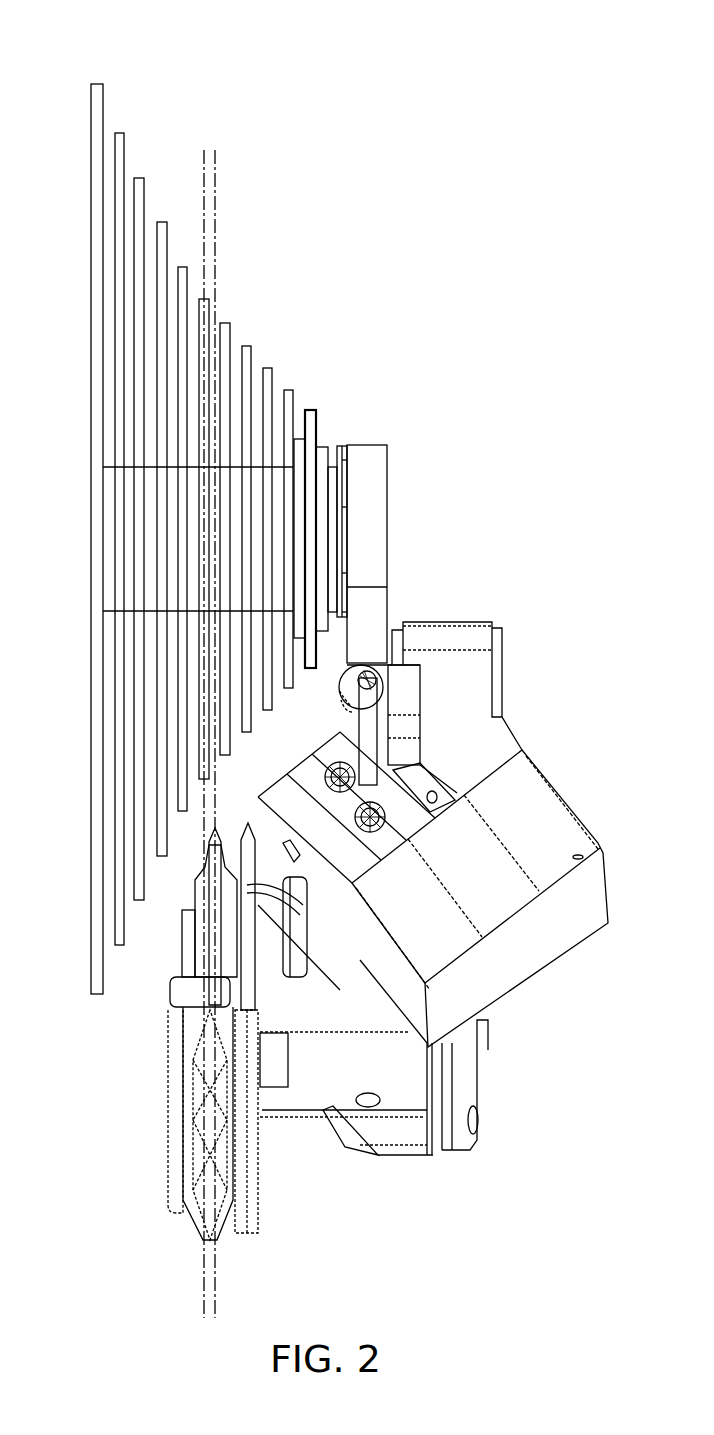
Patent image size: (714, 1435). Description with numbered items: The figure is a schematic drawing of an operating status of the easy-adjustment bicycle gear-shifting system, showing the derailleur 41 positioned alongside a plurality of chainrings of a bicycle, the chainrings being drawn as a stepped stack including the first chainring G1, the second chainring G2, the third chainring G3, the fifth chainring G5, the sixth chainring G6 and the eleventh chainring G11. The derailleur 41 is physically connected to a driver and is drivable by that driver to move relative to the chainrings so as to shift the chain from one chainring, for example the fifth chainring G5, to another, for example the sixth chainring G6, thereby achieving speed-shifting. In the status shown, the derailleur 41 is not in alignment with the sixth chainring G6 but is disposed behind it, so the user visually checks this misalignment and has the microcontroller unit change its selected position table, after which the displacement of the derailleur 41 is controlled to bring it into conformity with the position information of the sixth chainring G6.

The chainring G1 is at (96, 84).
The chainring G2 is at (119, 133).
The chainring G3 is at (140, 178).
The fifth chainring G5 is at (183, 267).
The sixth chainring G6 is at (204, 299).
The chainring G11 is at (308, 410).
The derailleur 41 is at (170, 1007).